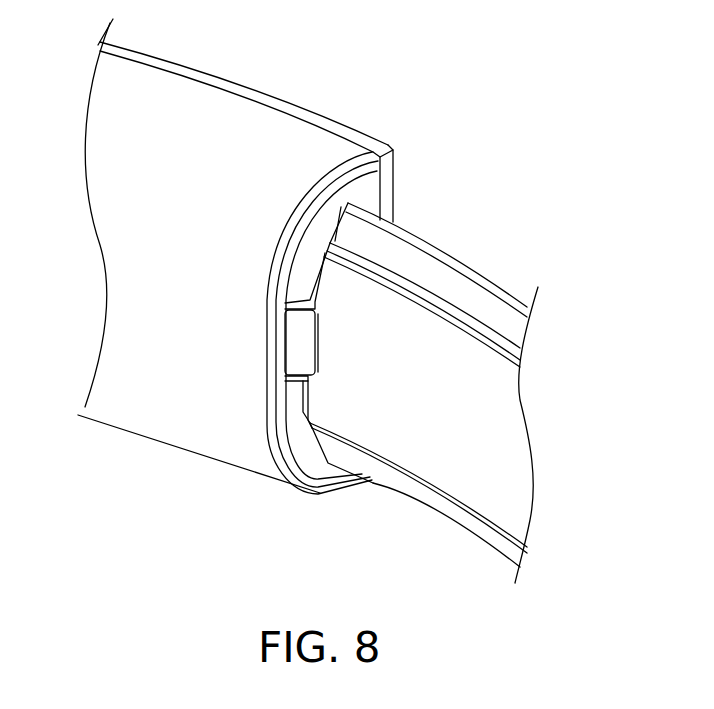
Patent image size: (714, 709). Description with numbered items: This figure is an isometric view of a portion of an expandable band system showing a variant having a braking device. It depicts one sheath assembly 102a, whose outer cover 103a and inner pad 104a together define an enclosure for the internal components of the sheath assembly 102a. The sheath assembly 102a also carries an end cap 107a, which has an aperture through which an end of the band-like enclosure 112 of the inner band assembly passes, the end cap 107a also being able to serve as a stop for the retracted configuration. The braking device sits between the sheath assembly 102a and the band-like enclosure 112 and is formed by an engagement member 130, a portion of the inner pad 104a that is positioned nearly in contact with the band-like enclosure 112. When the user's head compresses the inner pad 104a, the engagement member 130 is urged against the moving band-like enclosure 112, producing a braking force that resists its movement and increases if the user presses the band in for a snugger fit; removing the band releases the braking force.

The sheath assembly 102a is at (317, 81).
The outer cover 103a is at (385, 170).
The inner pad 104a is at (187, 412).
The end cap 107a is at (368, 200).
The band-like enclosure 112 is at (427, 457).
The engagement member 130 is at (297, 353).